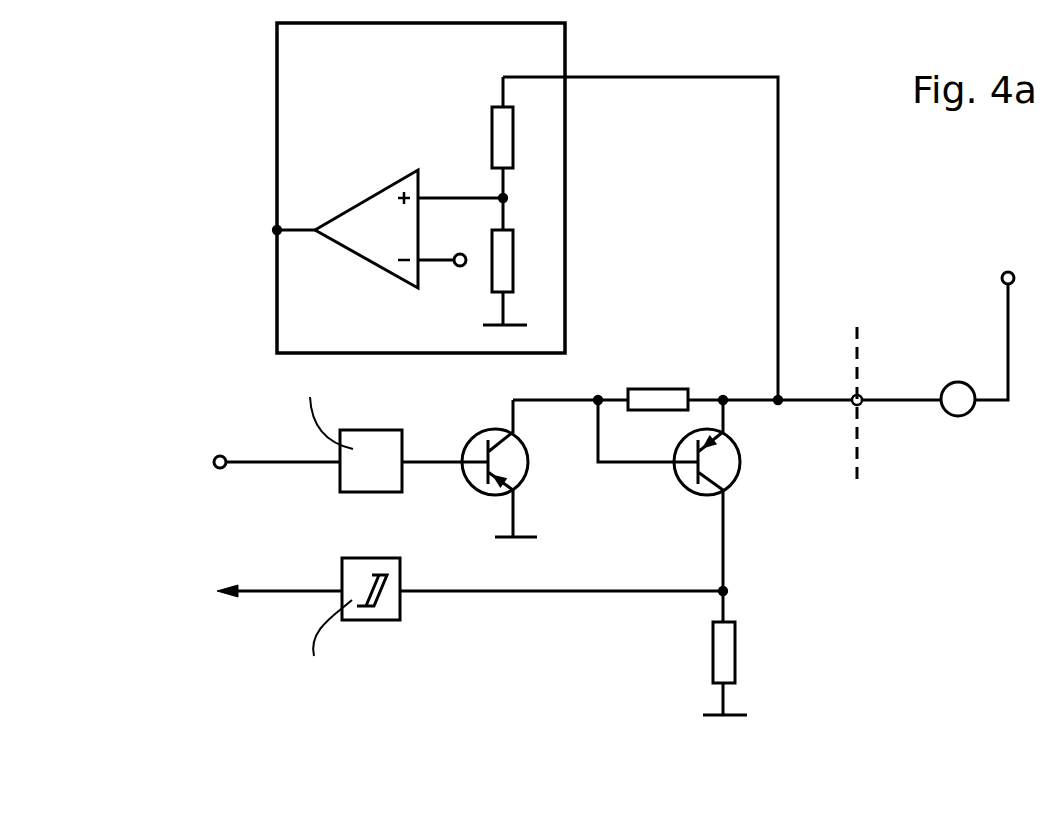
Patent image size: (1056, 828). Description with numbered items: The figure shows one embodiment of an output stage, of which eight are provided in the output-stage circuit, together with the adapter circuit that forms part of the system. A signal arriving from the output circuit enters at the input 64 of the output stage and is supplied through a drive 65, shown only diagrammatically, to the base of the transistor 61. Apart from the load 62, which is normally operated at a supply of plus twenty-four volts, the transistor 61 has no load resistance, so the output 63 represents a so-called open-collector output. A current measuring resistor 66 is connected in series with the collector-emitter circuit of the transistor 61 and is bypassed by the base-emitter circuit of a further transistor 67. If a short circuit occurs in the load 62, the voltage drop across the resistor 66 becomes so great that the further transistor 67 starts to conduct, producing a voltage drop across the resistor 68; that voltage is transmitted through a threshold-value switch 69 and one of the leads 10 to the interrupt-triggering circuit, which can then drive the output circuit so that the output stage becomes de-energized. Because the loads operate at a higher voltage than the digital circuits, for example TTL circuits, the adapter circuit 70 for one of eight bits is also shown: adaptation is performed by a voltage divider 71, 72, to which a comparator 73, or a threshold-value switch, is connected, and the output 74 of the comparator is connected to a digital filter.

The lead 10 is at (248, 590).
The transistor 61 is at (517, 466).
The load 62 is at (953, 402).
The output 63 is at (862, 398).
The input 64 is at (218, 453).
The drive 65 is at (399, 410).
The current measuring resistor 66 is at (675, 372).
The further transistor 67 is at (728, 466).
The resistor 68 is at (722, 655).
The threshold-value switch 69 is at (397, 540).
The circuit 70 is at (458, 70).
The voltage divider 71 is at (533, 150).
The voltage divider 72 is at (533, 280).
The comparator 73 is at (380, 208).
The output 74 is at (273, 237).